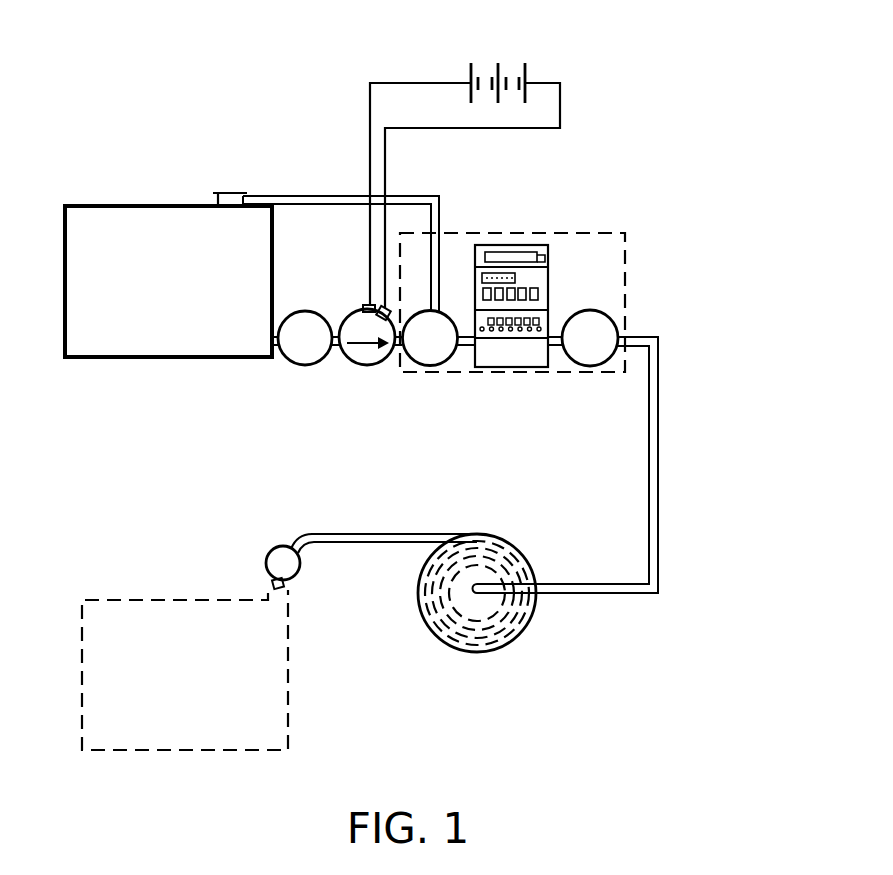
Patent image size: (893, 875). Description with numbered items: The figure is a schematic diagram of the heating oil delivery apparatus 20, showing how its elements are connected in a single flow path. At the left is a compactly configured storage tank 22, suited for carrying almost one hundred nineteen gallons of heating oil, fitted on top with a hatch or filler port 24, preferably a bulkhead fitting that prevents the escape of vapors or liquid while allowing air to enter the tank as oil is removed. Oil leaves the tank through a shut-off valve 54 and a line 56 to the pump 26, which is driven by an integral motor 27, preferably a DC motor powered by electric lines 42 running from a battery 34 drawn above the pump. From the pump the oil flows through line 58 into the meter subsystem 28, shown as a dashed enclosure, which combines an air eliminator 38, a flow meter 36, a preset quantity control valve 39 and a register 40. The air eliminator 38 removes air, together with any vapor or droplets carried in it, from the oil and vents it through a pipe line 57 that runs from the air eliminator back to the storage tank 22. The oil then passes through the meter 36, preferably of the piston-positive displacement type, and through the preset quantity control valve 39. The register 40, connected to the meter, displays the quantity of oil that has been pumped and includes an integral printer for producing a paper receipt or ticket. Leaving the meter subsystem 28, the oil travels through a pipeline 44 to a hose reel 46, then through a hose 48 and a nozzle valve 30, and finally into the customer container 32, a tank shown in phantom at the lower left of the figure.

The apparatus 20 is at (692, 277).
The storage tank 22 is at (125, 360).
The filler port 24 is at (226, 192).
The pump 26 is at (366, 374).
The motor 27 is at (368, 366).
The meter subsystem 28 is at (612, 237).
The nozzle valve 30 is at (267, 558).
The customer container 32 is at (289, 685).
The battery 34 is at (506, 57).
The meter 36 is at (551, 356).
The air eliminator 38 is at (430, 370).
The preset quantity control valve 39 is at (603, 365).
The register 40 is at (549, 271).
The electric lines 42 is at (370, 175).
The pipeline 44 is at (660, 441).
The hose reel 46 is at (478, 652).
The hose 48 is at (368, 530).
The shut-off valve 54 is at (305, 365).
The line 56 is at (336, 346).
The pipe line 57 is at (320, 195).
The line 58 is at (392, 348).